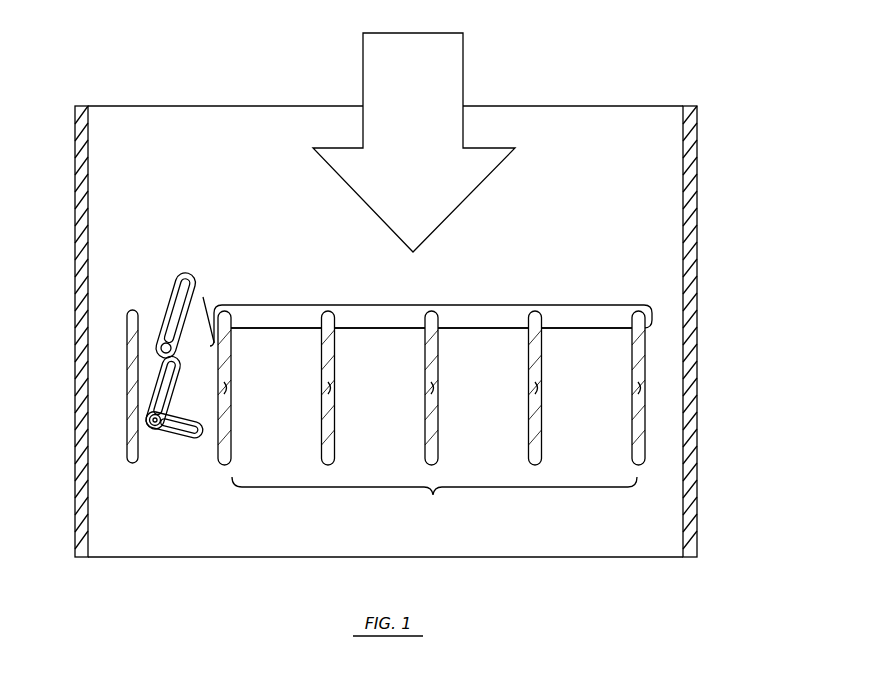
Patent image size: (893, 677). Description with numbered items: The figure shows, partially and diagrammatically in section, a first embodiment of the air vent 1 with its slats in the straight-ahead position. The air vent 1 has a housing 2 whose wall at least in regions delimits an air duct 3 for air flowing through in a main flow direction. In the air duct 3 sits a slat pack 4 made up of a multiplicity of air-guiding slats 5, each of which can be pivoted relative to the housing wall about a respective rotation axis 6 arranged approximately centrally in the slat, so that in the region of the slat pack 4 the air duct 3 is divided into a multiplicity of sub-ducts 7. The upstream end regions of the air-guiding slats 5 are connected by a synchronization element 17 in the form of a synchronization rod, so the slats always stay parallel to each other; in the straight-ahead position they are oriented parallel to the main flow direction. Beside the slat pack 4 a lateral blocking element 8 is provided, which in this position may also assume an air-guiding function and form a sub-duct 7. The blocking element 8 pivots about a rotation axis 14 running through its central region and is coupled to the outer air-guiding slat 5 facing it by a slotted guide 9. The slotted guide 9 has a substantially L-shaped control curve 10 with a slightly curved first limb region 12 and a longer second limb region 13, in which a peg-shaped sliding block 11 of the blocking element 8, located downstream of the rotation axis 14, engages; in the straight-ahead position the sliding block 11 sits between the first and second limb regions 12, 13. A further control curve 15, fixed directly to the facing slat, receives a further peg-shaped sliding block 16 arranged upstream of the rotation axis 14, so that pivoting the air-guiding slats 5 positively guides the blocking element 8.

The air vent 1 is at (47, 22).
The housing 2 is at (687, 175).
The air duct 3 is at (308, 105).
The slat pack 4 is at (479, 418).
The air-guiding slat 5 is at (224, 445).
The rotation axis 6 is at (229, 388).
The sub-duct 7 is at (431, 339).
The lateral blocking element 8 is at (145, 430).
The slotted guide 9 is at (150, 382).
The control curve 10 is at (98, 456).
The sliding block 11 is at (152, 423).
The first limb region 12 is at (168, 440).
The second limb region 13 is at (153, 376).
The rotation axis 14 is at (147, 406).
The further control curve 15 is at (165, 313).
The further sliding block 16 is at (166, 343).
The synchronization element 17 is at (462, 303).